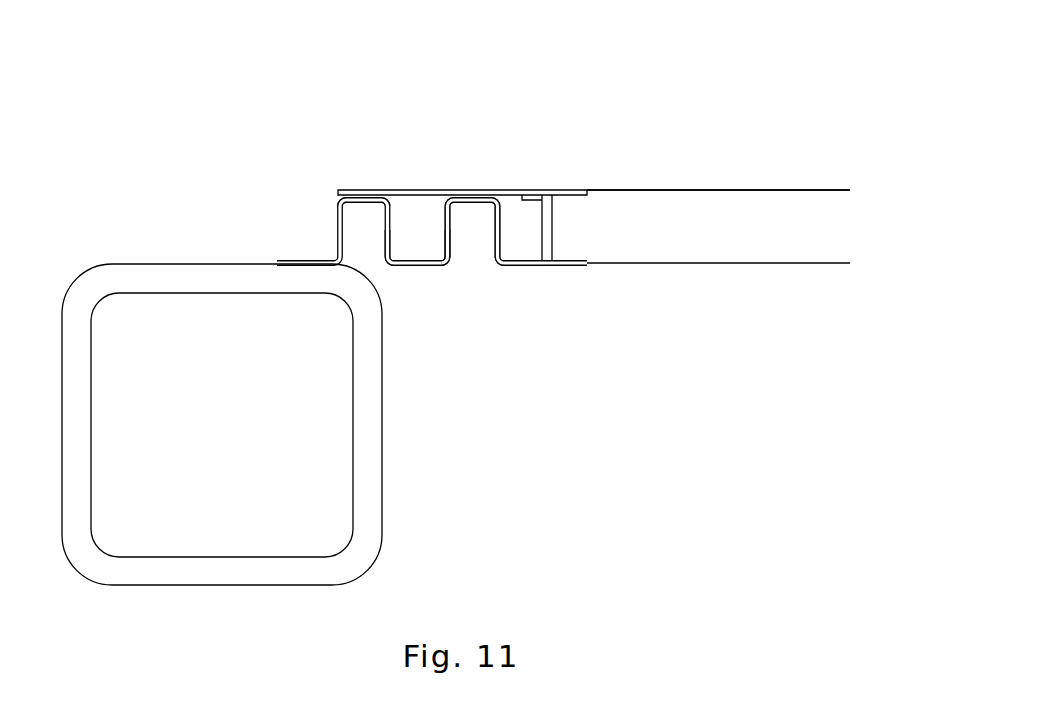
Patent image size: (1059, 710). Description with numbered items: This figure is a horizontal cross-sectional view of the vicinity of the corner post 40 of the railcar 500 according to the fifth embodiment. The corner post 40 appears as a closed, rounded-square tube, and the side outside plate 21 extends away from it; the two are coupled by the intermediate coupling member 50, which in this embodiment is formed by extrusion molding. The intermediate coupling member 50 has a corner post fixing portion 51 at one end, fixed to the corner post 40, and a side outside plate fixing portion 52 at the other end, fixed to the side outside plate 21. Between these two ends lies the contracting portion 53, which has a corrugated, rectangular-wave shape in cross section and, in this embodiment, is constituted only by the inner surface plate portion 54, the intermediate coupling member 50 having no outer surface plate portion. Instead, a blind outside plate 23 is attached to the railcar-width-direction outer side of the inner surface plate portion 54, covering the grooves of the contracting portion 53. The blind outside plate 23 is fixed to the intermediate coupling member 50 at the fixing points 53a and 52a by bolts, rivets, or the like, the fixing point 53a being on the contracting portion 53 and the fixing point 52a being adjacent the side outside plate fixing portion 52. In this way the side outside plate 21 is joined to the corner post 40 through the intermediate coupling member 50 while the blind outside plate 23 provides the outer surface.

The railcar 500 is at (662, 125).
The side outside plate 21 is at (743, 190).
The blind outside plate 23 is at (412, 190).
The intermediate coupling member 50 is at (467, 182).
The corner post fixing portion 51 is at (307, 258).
The side outside plate fixing portion 52 is at (567, 265).
The fixing point 52a is at (532, 203).
The contracting portion 53 is at (518, 265).
The fixing point 53a is at (363, 205).
The inner surface plate portion 54 is at (415, 265).
The corner post 40 is at (365, 394).